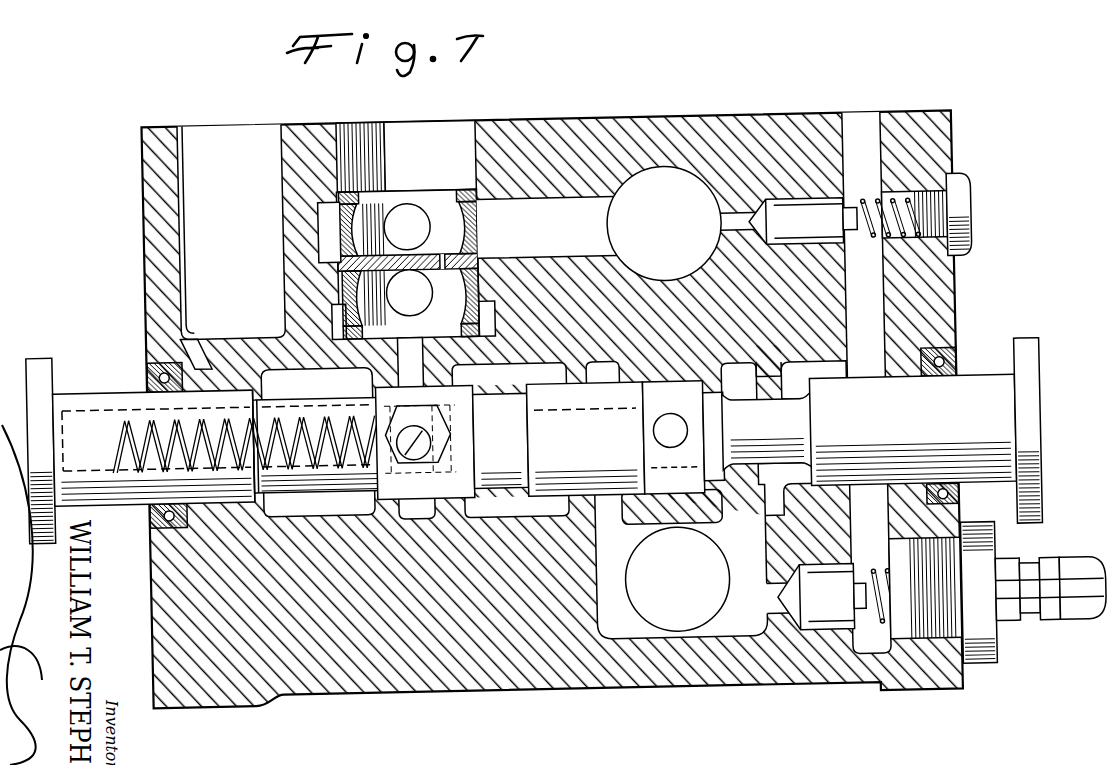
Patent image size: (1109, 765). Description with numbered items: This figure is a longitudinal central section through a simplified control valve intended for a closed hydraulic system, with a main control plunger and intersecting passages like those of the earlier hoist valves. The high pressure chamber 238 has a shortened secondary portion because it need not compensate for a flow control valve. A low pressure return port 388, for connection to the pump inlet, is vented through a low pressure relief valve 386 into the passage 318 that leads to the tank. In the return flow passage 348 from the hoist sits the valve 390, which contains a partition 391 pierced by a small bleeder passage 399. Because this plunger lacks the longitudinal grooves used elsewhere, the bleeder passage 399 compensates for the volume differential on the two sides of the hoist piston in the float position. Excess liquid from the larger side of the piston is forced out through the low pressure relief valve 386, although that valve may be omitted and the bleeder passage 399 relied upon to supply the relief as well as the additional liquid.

The high pressure chamber 238 is at (597, 621).
The passage leading to the tank 318 is at (869, 137).
The return flow passage 348 is at (417, 347).
The low pressure relief valve 386 is at (788, 210).
The low pressure return port 388 is at (667, 183).
The valve 390 is at (447, 294).
The partition 391 is at (343, 259).
The bleeder passage 399 is at (447, 208).